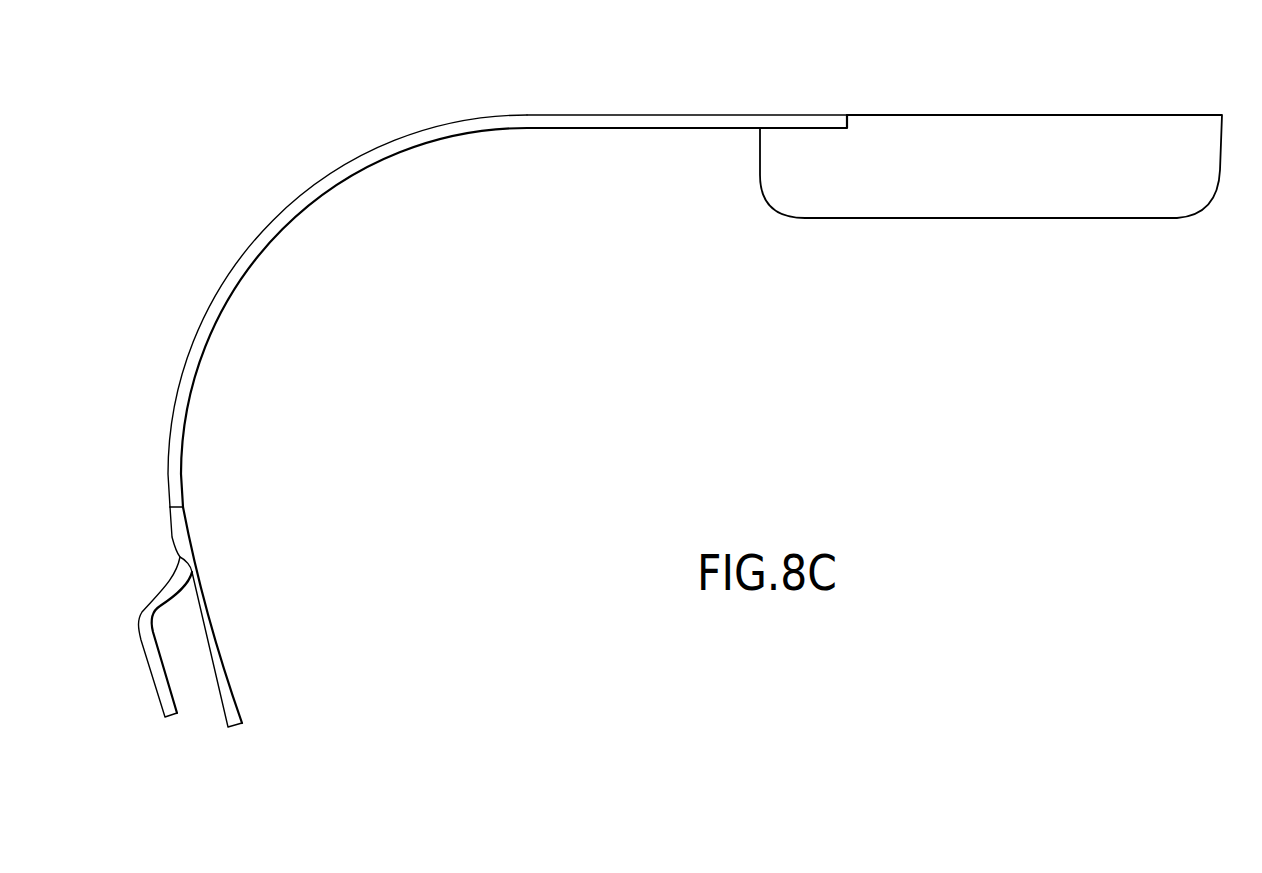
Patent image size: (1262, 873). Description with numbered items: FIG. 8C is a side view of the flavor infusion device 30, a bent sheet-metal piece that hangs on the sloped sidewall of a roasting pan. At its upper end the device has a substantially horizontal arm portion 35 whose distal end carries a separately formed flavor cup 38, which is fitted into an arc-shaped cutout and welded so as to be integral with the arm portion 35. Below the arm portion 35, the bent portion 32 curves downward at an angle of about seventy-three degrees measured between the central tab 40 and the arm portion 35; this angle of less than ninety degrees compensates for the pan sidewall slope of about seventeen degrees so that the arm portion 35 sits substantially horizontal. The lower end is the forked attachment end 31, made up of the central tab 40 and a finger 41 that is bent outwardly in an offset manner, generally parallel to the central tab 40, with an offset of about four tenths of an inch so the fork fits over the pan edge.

The flavor infusion device 30 is at (625, 178).
The forked attachment end 31 is at (246, 636).
The bent portion 32 is at (250, 268).
The horizontal arm portion 35 is at (697, 116).
The flavor cup 38 is at (990, 218).
The central tab 40 is at (232, 691).
The finger 41 is at (165, 718).